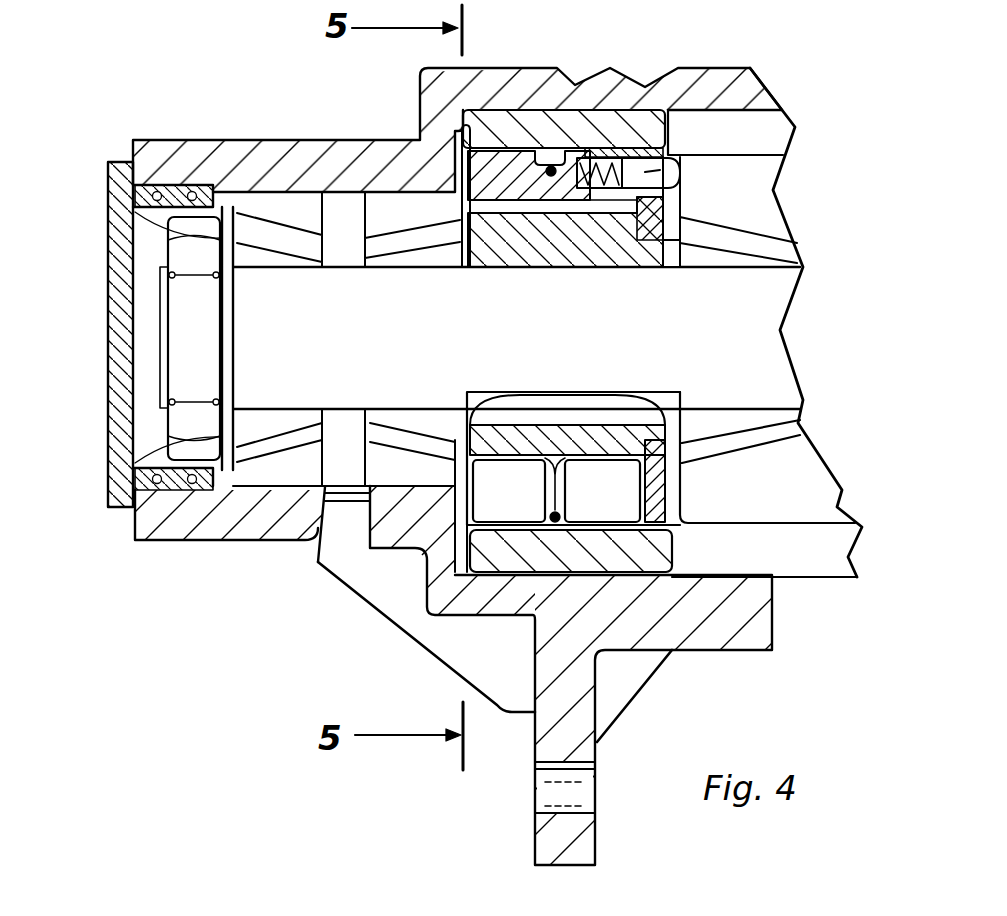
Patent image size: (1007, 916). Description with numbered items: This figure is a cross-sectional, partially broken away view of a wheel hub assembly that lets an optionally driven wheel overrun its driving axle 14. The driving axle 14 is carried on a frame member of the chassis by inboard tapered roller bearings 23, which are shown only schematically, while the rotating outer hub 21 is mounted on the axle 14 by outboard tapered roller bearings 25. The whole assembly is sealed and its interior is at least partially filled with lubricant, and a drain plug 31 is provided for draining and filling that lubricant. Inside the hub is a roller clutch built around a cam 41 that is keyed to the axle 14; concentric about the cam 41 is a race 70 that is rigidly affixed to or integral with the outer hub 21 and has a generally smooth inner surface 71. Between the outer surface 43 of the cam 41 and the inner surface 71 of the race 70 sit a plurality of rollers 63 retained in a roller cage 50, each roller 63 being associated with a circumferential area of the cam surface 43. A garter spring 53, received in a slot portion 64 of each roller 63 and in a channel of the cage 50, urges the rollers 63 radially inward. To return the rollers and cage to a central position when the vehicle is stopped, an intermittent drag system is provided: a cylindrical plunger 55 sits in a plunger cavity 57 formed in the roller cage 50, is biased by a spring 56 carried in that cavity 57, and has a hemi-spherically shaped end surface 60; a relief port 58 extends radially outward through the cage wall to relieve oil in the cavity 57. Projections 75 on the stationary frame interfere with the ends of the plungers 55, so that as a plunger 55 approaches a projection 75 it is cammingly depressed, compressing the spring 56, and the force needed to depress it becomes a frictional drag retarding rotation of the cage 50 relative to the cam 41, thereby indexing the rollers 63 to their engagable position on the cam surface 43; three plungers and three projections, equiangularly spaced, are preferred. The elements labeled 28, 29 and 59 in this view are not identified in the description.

The driving axle 14 is at (345, 318).
The outer hub 21 is at (210, 523).
The inboard tapered roller bearings 23 is at (760, 215).
The outboard tapered roller bearings 25 is at (283, 210).
The retaining ring 28 is at (212, 342).
The end cap 29 is at (112, 206).
The drain plug 31 is at (330, 550).
The cam 41 is at (490, 248).
The outer surface of the cam 43 is at (540, 208).
The roller cage 50 is at (400, 208).
The garter spring 53 is at (533, 618).
The plunger 55 is at (672, 183).
The spring 56 is at (612, 195).
The plunger cavity 57 is at (648, 150).
The relief port 58 is at (585, 165).
The seal housing 59 is at (590, 453).
The hemi-spherically shaped surface 60 is at (673, 172).
The rollers 63 is at (515, 506).
The slot portion 64 is at (565, 493).
The race 70 is at (487, 130).
The inner surface of the race 71 is at (550, 165).
The projections 75 is at (673, 148).